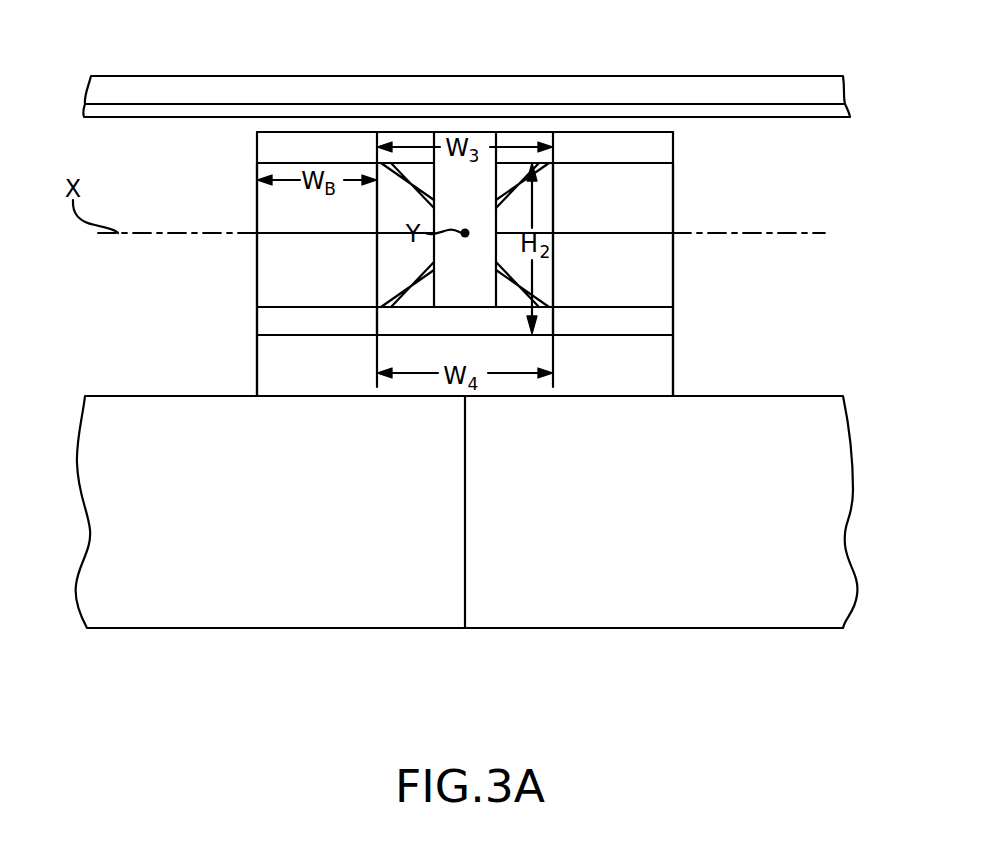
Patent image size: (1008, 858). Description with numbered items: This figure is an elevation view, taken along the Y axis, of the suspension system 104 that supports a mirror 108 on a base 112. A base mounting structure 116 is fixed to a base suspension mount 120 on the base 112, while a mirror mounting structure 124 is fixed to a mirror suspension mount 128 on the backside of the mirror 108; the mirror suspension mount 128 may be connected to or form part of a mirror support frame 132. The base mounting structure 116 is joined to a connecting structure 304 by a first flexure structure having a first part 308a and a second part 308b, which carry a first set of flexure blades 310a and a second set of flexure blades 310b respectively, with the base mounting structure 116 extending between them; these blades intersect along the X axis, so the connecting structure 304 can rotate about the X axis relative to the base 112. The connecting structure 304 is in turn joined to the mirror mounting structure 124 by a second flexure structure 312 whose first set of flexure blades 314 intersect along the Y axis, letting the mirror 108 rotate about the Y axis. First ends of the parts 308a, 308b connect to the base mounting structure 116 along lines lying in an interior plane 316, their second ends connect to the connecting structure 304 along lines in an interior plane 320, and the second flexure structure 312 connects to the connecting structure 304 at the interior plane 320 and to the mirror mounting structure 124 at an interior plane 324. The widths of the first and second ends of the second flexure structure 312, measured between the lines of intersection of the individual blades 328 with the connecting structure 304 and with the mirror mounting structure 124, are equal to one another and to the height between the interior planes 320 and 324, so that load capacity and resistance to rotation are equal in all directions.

The suspension system 104 is at (250, 148).
The mirror 108 is at (743, 85).
The base 112 is at (792, 603).
The base mounting structure 116 is at (267, 323).
The base suspension mount 120 is at (662, 368).
The mirror mounting structure 124 is at (413, 328).
The mirror suspension mount 128 is at (471, 291).
The mirror support frame 132 is at (800, 115).
The connecting structure 304 is at (663, 145).
The first part of the first flexure structure 308a is at (270, 268).
The second part of the first flexure structure 308b is at (655, 267).
The first set of flexure blades 310a is at (270, 195).
The second set of flexure blades 310b is at (658, 202).
The second flexure structure 312 is at (530, 177).
The first set of flexure blades of the second flexure structure 314 is at (395, 177).
The interior plane of the base mounting structure 316 is at (647, 306).
The interior plane of the connecting structure 320 is at (584, 162).
The interior plane of the mirror mounting structure 324 is at (404, 305).
The individual blades 328 is at (275, 218).